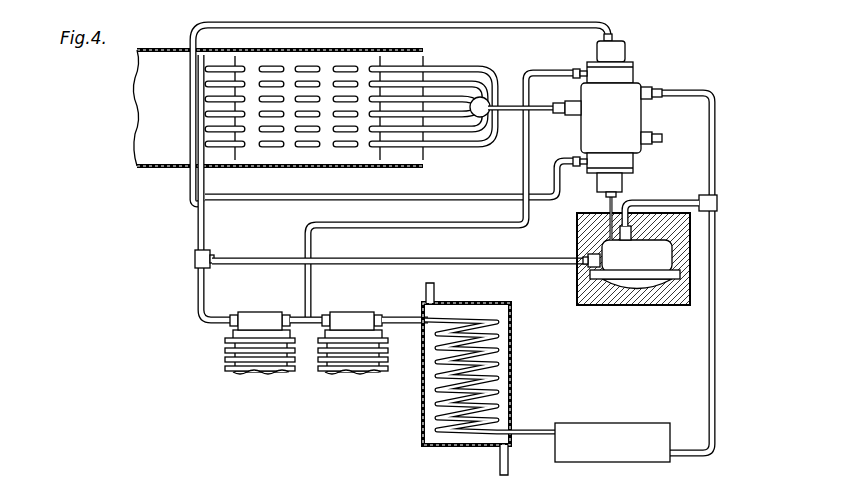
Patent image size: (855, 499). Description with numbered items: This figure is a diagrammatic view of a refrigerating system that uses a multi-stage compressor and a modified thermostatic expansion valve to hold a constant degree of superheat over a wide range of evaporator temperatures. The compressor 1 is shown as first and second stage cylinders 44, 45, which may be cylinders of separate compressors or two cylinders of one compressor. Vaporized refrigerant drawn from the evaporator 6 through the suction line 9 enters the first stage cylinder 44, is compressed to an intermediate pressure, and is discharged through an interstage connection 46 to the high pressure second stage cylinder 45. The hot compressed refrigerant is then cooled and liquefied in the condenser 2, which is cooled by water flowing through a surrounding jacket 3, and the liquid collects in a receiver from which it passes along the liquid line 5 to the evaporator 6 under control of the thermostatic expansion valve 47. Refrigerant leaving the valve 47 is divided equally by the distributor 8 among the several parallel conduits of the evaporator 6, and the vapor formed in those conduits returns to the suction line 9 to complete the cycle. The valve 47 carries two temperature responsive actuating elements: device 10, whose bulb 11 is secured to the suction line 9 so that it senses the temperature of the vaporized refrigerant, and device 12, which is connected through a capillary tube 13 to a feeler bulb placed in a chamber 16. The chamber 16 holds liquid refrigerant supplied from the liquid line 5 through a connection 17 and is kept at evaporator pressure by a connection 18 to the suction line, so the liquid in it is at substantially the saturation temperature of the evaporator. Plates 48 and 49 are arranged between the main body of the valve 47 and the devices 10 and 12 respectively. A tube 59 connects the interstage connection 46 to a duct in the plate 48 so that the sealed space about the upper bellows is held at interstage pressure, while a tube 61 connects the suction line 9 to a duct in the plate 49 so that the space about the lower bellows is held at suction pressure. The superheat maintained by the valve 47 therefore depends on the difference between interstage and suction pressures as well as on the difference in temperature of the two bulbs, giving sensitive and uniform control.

The compressor 1 is at (598, 419).
The condenser 2 is at (490, 362).
The jacket 3 is at (506, 386).
The liquid line 5 is at (716, 364).
The evaporator 6 is at (290, 160).
The distributor 8 is at (490, 98).
The suction line 9 is at (197, 229).
The temperature responsive device 10 is at (612, 50).
The thermal element or bulb 11 is at (190, 186).
The temperature responsive device 12 is at (619, 183).
The capillary tube 13 is at (609, 206).
The chamber 16 is at (633, 259).
The connection 17 is at (672, 202).
The connection 18 is at (501, 261).
The first stage cylinder 44 is at (253, 312).
The second stage cylinder 45 is at (348, 312).
The interstage connection 46 is at (313, 318).
The thermostatic expansion valve 47 is at (607, 118).
The plate 48 is at (620, 74).
The plate 49 is at (620, 160).
The tube 59 is at (408, 225).
The tube 61 is at (436, 197).